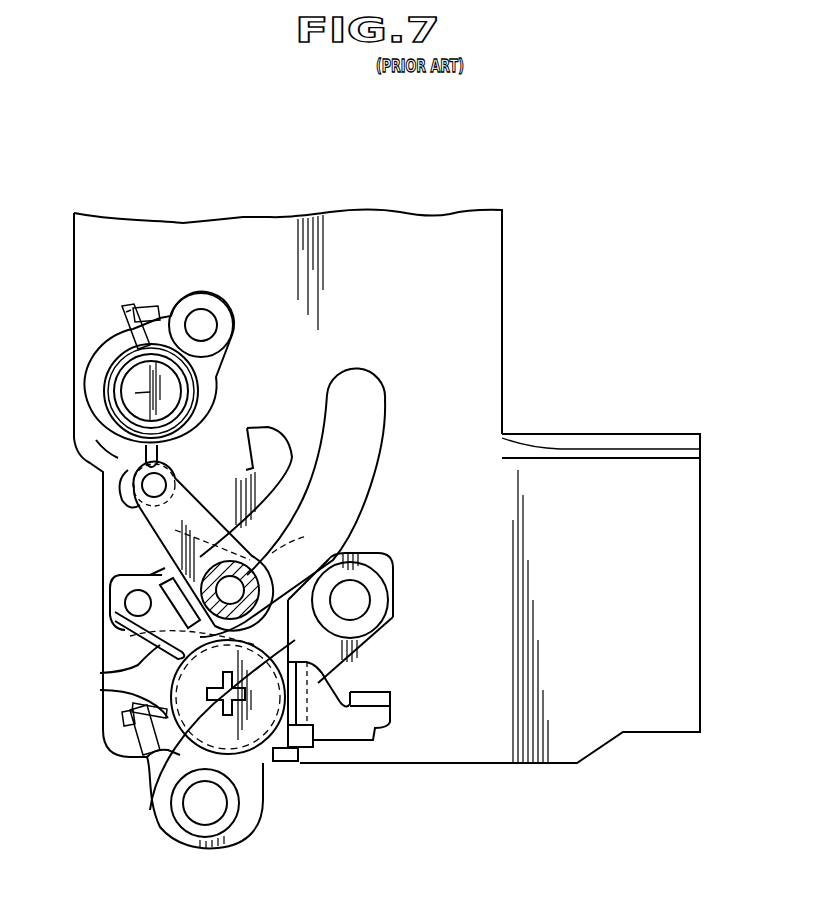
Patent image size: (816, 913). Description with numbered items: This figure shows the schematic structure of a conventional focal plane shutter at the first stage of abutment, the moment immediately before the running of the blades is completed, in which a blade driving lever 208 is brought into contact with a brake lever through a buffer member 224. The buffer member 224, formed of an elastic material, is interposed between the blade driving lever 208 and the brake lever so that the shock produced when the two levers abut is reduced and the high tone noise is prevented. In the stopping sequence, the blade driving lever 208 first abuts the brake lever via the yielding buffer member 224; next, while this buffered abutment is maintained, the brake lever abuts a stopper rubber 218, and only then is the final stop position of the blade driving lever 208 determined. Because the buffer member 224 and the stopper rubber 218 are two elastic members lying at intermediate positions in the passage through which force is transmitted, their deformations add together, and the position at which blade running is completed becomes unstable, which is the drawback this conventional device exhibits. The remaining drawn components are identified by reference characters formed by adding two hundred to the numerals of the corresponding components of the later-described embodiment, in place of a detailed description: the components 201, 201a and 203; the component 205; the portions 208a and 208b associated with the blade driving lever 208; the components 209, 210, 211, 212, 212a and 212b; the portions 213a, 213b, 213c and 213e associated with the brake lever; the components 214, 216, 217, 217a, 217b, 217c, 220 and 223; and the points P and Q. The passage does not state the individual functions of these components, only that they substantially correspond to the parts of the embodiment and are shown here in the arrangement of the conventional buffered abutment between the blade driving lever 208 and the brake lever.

The frame 201 is at (450, 235).
The frame edge 201a is at (502, 320).
The shelf 203 is at (638, 442).
The pin 205 is at (297, 558).
The blade driving lever 208 is at (190, 500).
The lever portion 208a is at (150, 575).
The lever tab 208b is at (148, 305).
The roller 209 is at (290, 565).
The pivot pin 210 is at (128, 485).
The boss 211 is at (200, 305).
The plate 212 is at (200, 395).
The plate tab 212a is at (128, 305).
The plate portion 212b is at (110, 450).
The lever hook 213a is at (268, 482).
The lever foot 213b is at (350, 730).
The lever tab 213c is at (388, 698).
The lever edge 213e is at (130, 636).
The pin 214 is at (126, 603).
The spring 216 is at (100, 673).
The latch body 217 is at (345, 650).
The latch block 217a is at (122, 718).
The latch pin 217b is at (293, 755).
The latch pivot 217c is at (355, 608).
The stopper rubber 218 is at (395, 590).
The bracket 220 is at (137, 757).
The disk 223 is at (250, 735).
The buffer member 224 is at (175, 530).
The point P is at (135, 393).
The point Q is at (150, 810).